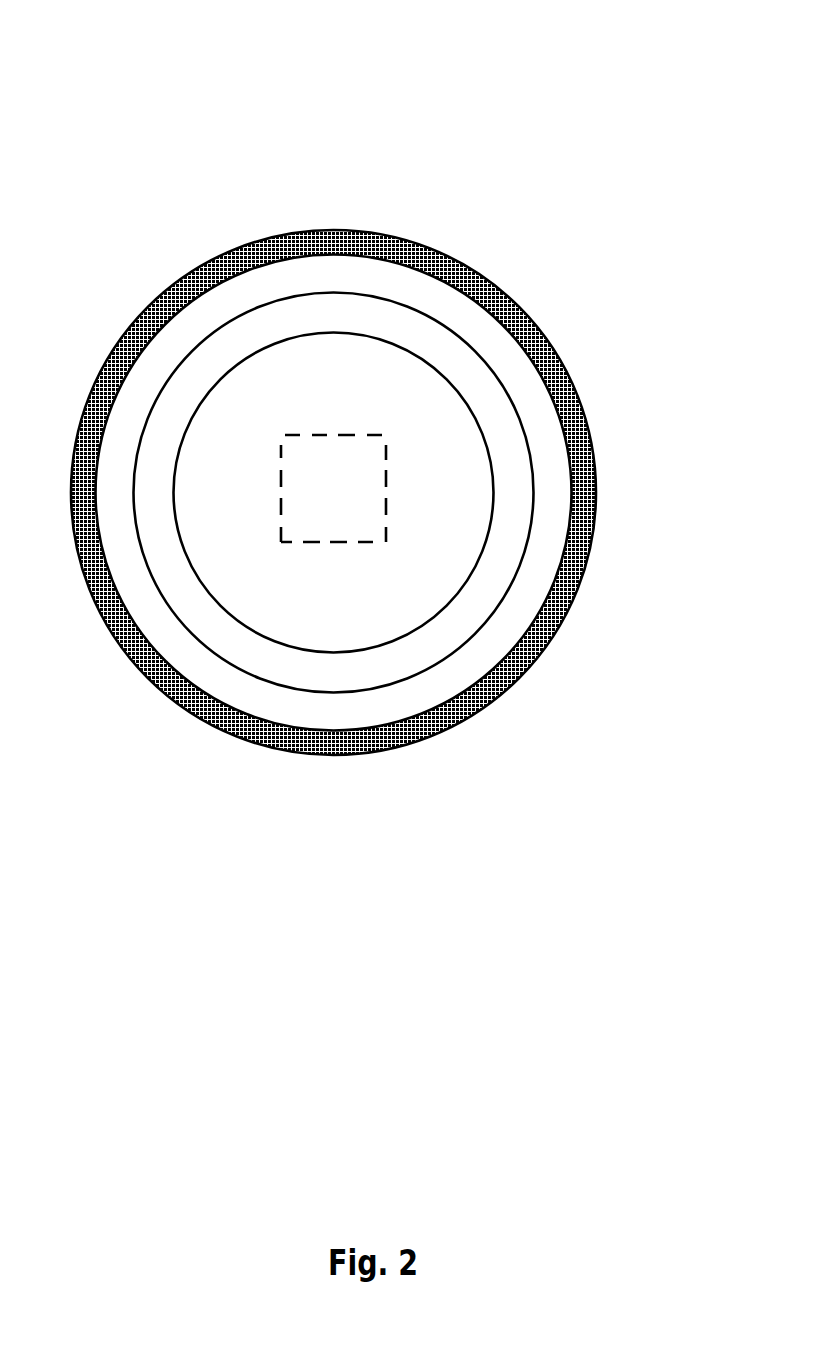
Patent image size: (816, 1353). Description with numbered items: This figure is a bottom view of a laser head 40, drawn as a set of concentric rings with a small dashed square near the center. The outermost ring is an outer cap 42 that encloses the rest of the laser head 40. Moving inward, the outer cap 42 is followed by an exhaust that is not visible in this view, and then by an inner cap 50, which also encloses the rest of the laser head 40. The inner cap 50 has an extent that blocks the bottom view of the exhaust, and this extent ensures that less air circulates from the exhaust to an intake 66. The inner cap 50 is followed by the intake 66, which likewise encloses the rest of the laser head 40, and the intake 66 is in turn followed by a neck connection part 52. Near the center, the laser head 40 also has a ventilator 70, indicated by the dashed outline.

The laser head 40 is at (126, 160).
The outer cap 42 is at (490, 283).
The inner cap 50 is at (522, 548).
The neck connection part 52 is at (302, 645).
The intake 66 is at (417, 650).
The ventilator 70 is at (333, 488).